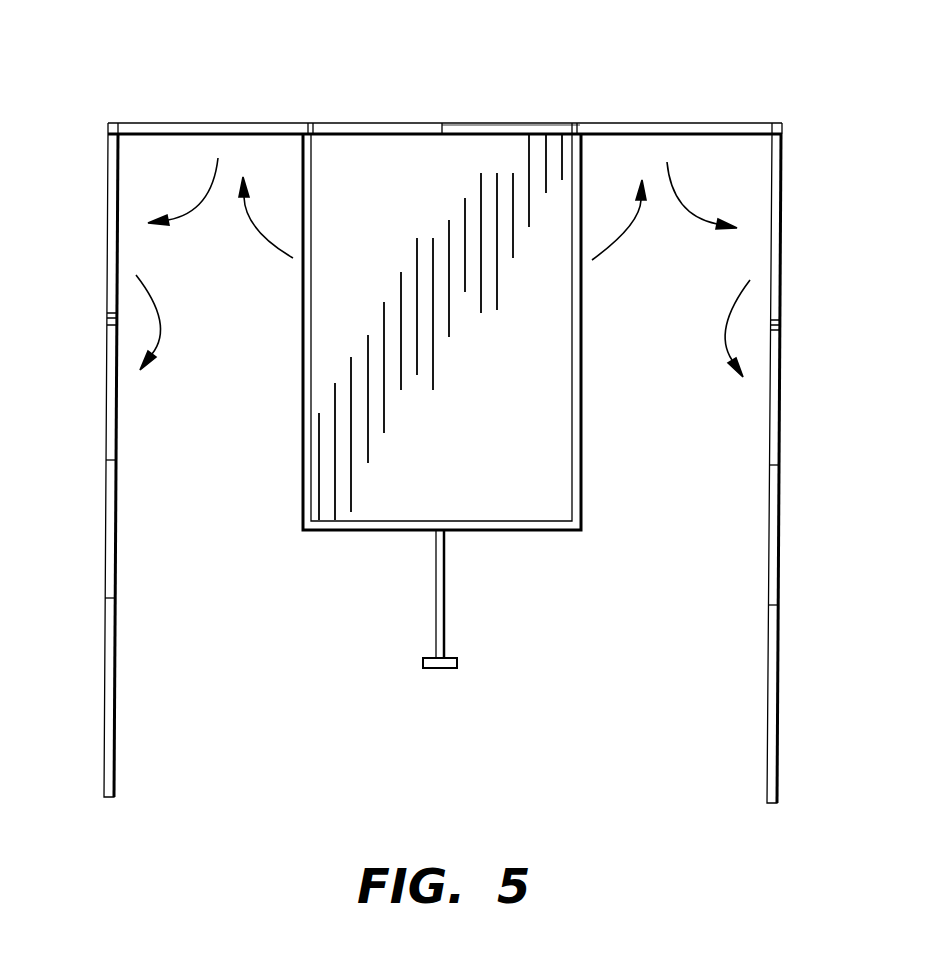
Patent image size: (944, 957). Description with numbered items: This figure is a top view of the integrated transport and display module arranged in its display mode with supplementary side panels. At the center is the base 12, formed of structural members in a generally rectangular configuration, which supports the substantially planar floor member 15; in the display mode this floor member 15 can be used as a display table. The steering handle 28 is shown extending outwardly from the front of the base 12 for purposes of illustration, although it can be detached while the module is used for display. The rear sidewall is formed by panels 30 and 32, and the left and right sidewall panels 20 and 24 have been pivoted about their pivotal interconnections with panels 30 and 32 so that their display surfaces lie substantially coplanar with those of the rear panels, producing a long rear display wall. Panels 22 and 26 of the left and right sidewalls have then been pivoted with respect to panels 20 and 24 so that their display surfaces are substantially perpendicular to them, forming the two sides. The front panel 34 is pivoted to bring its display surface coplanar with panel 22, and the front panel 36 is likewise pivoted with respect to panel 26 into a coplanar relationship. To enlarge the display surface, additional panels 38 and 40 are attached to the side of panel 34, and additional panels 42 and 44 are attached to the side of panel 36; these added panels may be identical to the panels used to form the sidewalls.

The base 12 is at (582, 407).
The floor member 15 is at (513, 440).
The panel 20 is at (211, 125).
The panel 22 is at (113, 183).
The panel 24 is at (695, 130).
The panel 26 is at (783, 252).
The steering handle 28 is at (435, 612).
The panel 30 is at (380, 125).
The panel 32 is at (492, 125).
The panel 34 is at (113, 377).
The panel 36 is at (772, 405).
The panel 38 is at (110, 505).
The panel 40 is at (110, 652).
The panel 42 is at (772, 535).
The panel 44 is at (768, 687).